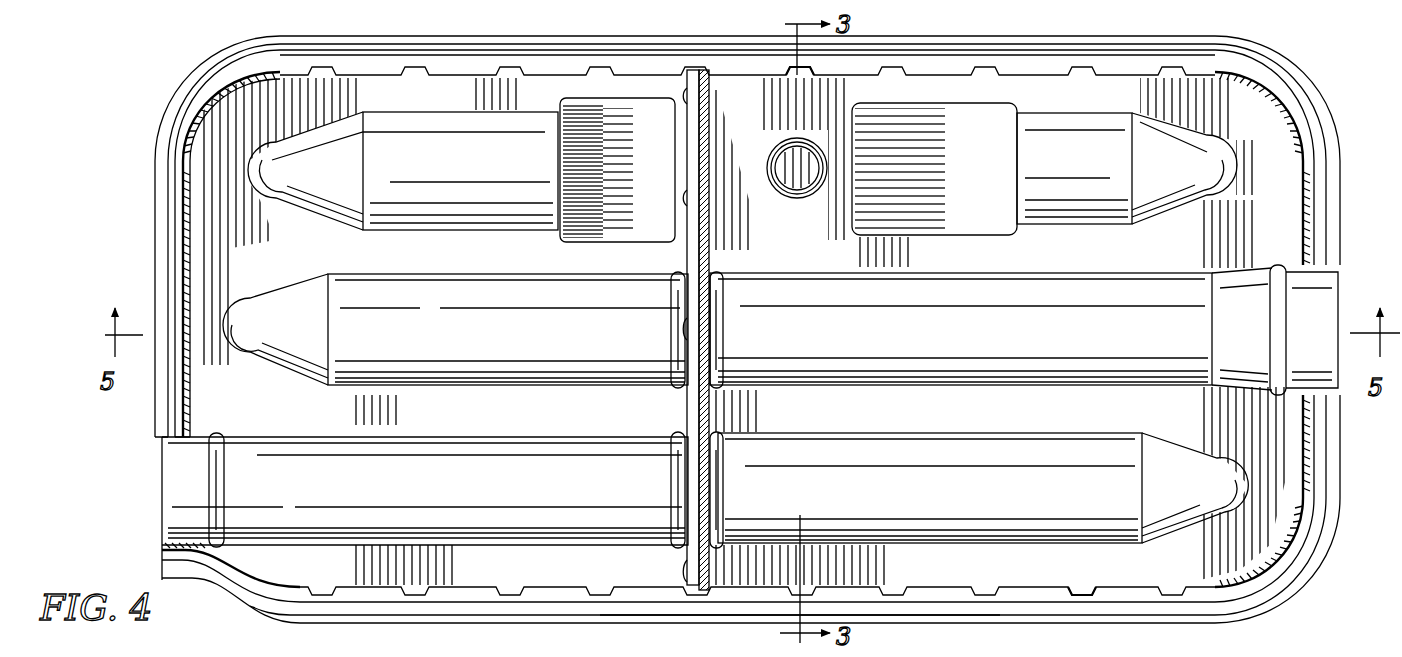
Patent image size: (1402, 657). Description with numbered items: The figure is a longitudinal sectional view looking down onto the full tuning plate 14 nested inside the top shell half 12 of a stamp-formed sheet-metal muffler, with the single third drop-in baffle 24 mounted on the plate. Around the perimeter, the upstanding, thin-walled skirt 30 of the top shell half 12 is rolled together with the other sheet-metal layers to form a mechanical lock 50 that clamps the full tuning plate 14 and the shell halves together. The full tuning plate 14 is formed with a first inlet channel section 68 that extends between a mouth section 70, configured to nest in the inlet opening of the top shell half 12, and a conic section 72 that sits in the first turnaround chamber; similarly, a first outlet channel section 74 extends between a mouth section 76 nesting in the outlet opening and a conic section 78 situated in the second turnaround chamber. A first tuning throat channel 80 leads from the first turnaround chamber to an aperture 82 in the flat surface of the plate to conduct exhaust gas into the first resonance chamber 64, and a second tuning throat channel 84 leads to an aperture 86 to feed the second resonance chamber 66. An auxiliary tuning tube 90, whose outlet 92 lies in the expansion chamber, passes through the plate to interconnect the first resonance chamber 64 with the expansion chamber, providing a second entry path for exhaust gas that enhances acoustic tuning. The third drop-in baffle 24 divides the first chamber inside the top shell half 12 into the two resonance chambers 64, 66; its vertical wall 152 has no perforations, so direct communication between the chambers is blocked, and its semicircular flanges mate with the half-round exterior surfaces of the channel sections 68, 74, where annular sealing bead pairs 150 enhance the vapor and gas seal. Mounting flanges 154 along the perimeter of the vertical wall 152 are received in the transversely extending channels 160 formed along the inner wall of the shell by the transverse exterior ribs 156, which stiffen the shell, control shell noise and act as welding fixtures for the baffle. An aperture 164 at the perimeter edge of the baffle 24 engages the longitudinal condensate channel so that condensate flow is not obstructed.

The top shell half 12 is at (1313, 238).
The full tuning plate 14 is at (1289, 171).
The third drop-in baffle 24 is at (706, 301).
The perimetrically extending skirt 30 is at (166, 232).
The mechanical lock 50 is at (153, 136).
The first resonance chamber 64 is at (1270, 138).
The second resonance chamber 66 is at (230, 134).
The first inlet channel section 68 is at (952, 468).
The mouth section 70 is at (163, 478).
The conic section 72 is at (1180, 475).
The first outlet channel section 74 is at (990, 322).
The mouth section 76 is at (1325, 300).
The conic section 78 is at (282, 305).
The first tuning throat channel 80 is at (1086, 167).
The aperture 82 is at (958, 104).
The second tuning throat channel 84 is at (484, 167).
The aperture 86 is at (640, 232).
The auxiliary tuning tube 90 is at (800, 186).
The outlet 92 is at (795, 152).
The annular sealing bead pairs 150 is at (672, 320).
The vertical wall 152 is at (705, 410).
The mounting flanges 154 is at (687, 414).
The transversely extending exterior ribs 156 is at (985, 78).
The transversely extending channels 160 is at (800, 184).
The aperture 164 is at (800, 636).